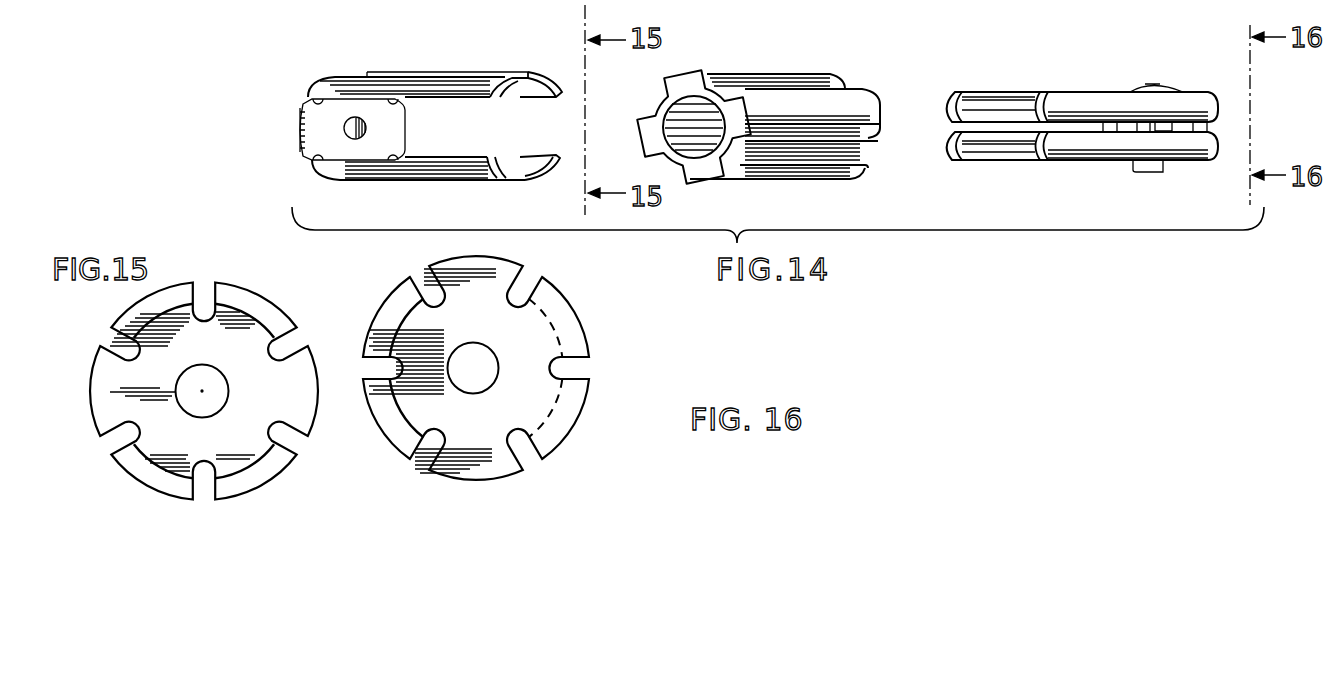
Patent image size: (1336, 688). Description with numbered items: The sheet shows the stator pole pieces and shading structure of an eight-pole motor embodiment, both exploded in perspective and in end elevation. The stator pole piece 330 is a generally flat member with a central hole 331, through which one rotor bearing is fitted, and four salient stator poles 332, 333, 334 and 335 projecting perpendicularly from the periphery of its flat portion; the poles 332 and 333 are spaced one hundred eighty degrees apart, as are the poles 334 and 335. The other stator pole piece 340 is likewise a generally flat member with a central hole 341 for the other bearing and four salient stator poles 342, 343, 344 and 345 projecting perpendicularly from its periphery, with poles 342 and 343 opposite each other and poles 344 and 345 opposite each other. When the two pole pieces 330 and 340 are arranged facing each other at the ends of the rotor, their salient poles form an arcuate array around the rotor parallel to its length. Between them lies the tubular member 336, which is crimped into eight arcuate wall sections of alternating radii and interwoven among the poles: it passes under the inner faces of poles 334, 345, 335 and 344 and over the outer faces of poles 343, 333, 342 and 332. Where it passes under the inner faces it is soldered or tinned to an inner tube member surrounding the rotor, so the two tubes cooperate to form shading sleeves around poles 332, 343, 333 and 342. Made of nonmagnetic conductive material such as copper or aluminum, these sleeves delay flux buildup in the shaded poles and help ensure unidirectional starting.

In FIG. 14, the stator pole piece 330 is at (320, 128).
In FIG. 15, the stator pole piece 330 is at (225, 355).
In FIG. 14, the hole 331 is at (364, 128).
In FIG. 15, the hole 331 is at (229, 385).
In FIG. 14, the salient stator pole 332 is at (497, 82).
In FIG. 15, the salient stator pole 332 is at (182, 292).
In FIG. 14, the salient stator pole 333 is at (557, 160).
In FIG. 15, the salient stator pole 333 is at (258, 473).
In FIG. 14, the salient stator pole 334 is at (540, 78).
In FIG. 15, the salient stator pole 334 is at (249, 300).
In FIG. 14, the salient stator pole 335 is at (492, 175).
In FIG. 15, the salient stator pole 335 is at (142, 476).
In FIG. 14, the tubular member 336 is at (692, 180).
In FIG. 14, the stator pole piece 340 is at (1163, 80).
In FIG. 16, the stator pole piece 340 is at (491, 331).
In FIG. 14, the hole 341 is at (1163, 128).
In FIG. 16, the hole 341 is at (484, 384).
In FIG. 14, the salient stator pole 342 is at (1060, 158).
In FIG. 16, the salient stator pole 342 is at (390, 395).
In FIG. 14, the salient stator pole 343 is at (955, 97).
In FIG. 16, the salient stator pole 343 is at (568, 326).
In FIG. 14, the salient stator pole 344 is at (1045, 92).
In FIG. 16, the salient stator pole 344 is at (382, 315).
In FIG. 14, the salient stator pole 345 is at (958, 166).
In FIG. 16, the salient stator pole 345 is at (575, 403).